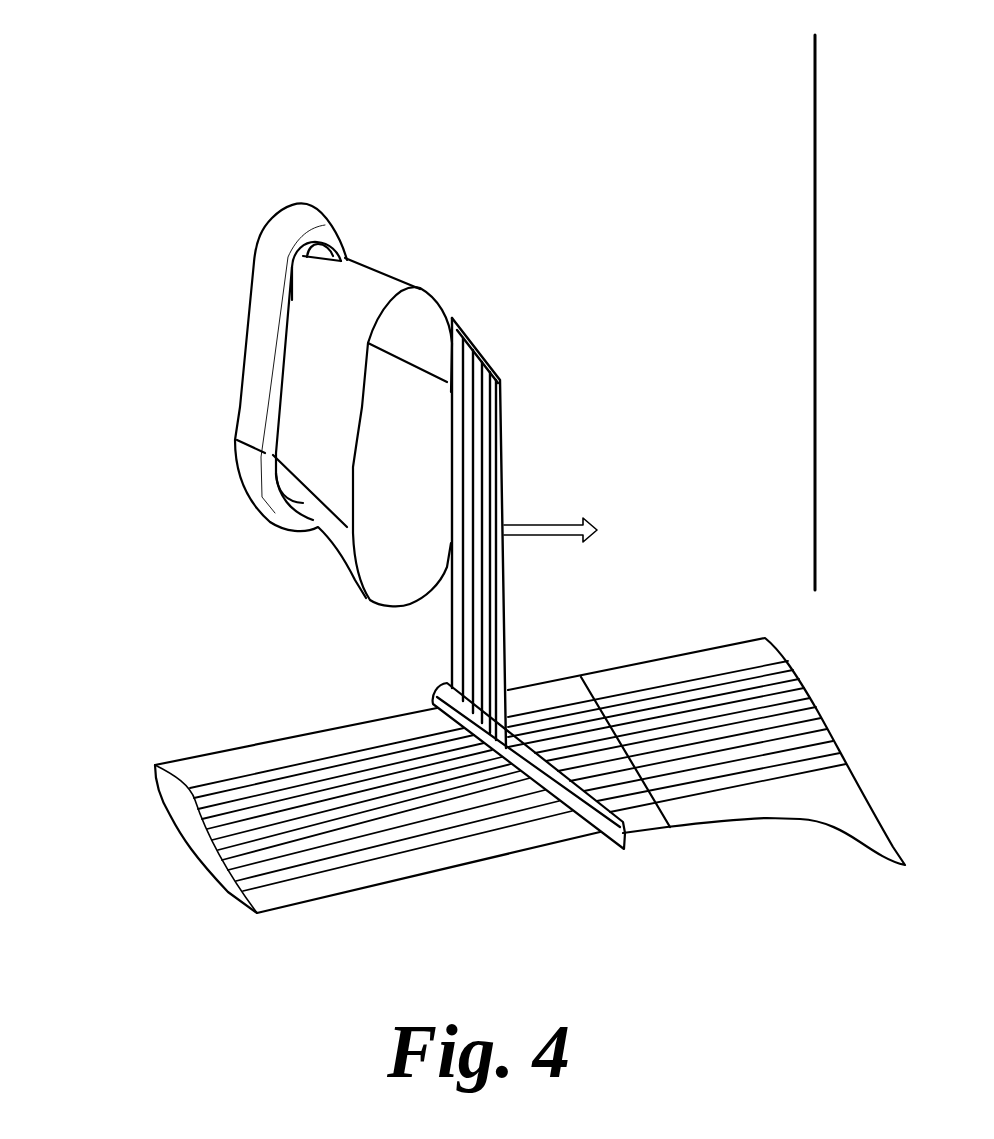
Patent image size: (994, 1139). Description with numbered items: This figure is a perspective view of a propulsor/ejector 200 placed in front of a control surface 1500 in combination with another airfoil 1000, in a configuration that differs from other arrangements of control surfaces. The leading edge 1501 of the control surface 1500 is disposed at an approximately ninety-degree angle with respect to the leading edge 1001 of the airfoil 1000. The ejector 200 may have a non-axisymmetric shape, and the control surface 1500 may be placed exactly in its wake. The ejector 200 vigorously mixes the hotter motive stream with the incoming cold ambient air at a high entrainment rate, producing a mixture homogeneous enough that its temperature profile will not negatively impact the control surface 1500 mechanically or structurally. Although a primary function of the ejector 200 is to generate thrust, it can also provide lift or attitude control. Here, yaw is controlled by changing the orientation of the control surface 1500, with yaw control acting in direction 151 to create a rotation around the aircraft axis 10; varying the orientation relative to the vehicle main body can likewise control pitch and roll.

The aircraft axis 10 is at (815, 212).
The propulsor/ejector 200 is at (422, 320).
The control surface 1500 is at (485, 492).
The direction of yaw control 151 is at (562, 527).
The leading edge of control surface 1501 is at (443, 642).
The leading edge of airfoil 1001 is at (234, 738).
The airfoil 1000 is at (673, 678).